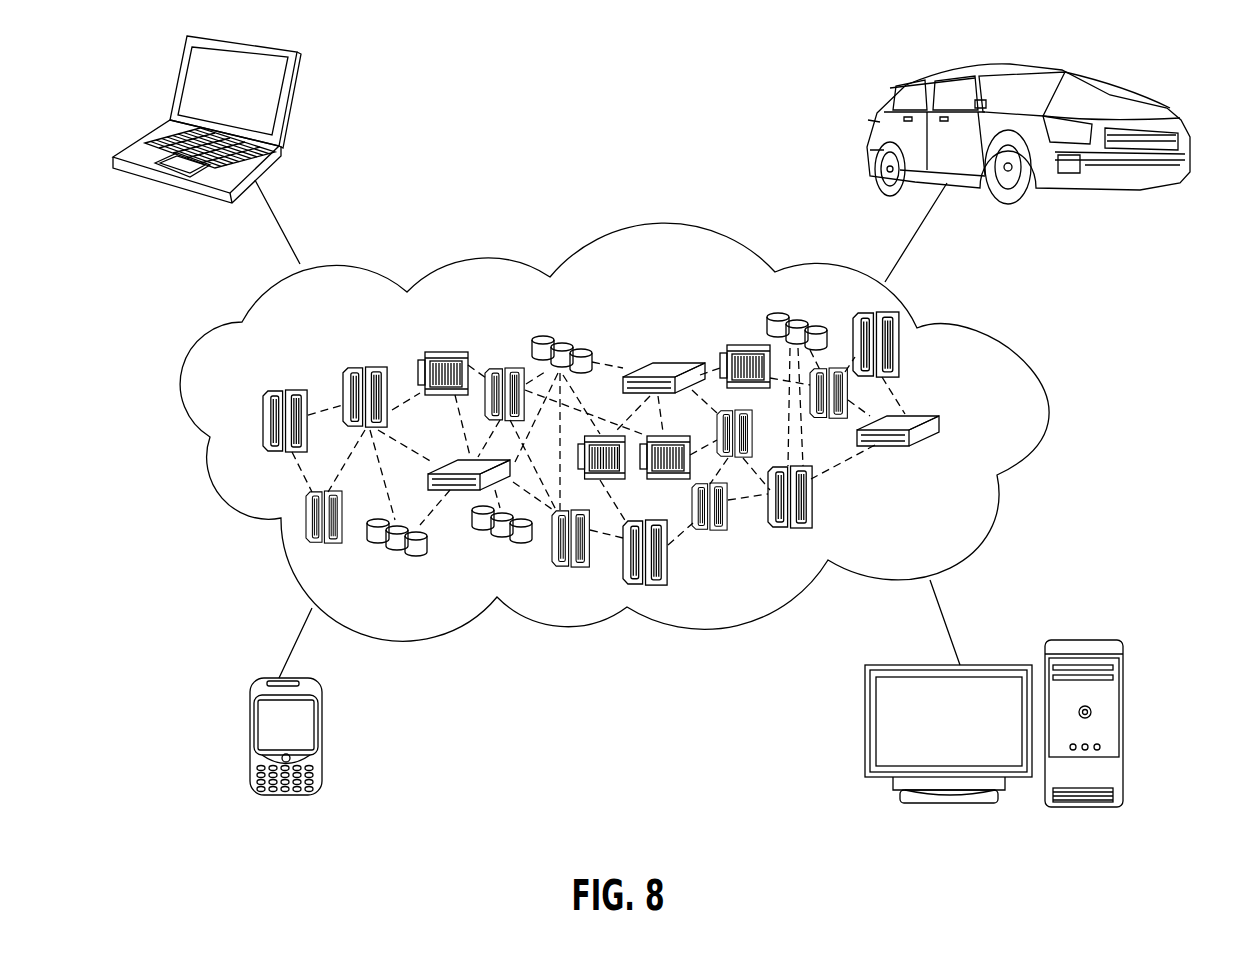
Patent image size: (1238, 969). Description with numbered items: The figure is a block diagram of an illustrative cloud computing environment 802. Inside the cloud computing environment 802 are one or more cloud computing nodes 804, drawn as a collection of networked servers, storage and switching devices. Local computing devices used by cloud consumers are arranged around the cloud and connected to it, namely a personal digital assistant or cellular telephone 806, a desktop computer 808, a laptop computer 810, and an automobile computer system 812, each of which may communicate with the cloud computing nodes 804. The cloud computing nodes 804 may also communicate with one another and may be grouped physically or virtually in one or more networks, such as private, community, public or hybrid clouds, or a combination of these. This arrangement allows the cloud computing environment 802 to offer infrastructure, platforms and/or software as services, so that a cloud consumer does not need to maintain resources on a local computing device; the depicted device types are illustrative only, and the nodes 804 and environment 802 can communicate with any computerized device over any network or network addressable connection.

The cloud computing environment 802 is at (1005, 340).
The cloud computing nodes 804 is at (982, 425).
The cellular telephone 806 is at (250, 742).
The desktop computer 808 is at (1087, 640).
The laptop computer 810 is at (290, 104).
The automobile computer system 812 is at (877, 112).